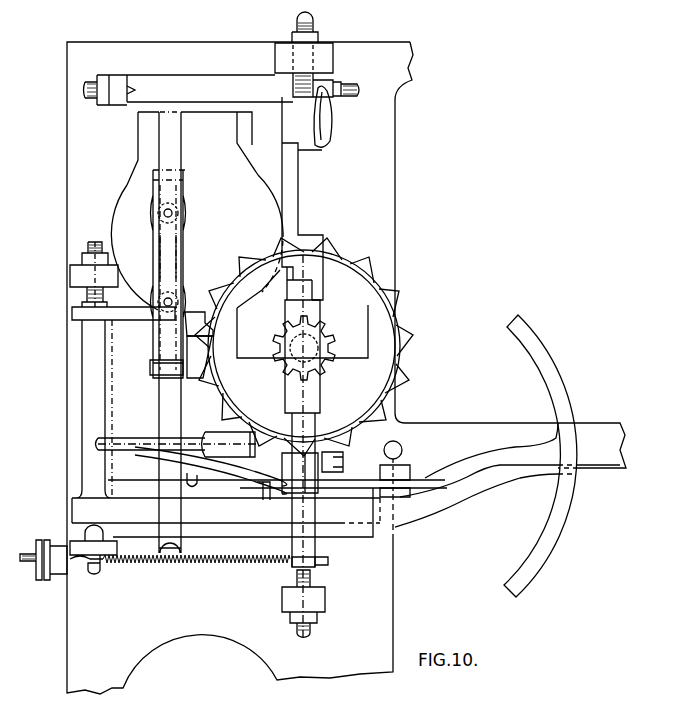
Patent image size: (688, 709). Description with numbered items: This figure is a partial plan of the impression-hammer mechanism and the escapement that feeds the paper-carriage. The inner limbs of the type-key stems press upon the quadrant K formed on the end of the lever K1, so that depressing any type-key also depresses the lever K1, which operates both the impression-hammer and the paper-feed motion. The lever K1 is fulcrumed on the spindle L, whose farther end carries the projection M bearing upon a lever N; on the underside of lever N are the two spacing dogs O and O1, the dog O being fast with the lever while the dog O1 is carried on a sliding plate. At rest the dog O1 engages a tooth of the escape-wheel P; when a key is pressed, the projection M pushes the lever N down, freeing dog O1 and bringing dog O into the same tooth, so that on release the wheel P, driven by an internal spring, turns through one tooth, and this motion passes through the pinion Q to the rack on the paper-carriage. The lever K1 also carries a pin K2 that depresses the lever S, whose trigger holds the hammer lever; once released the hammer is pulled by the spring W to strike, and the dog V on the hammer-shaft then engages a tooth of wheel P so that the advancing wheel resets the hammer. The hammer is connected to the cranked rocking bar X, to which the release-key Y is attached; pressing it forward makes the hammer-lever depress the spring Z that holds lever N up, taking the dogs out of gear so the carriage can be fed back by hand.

The lever N is at (177, 162).
The projection M is at (123, 307).
The release-key Y is at (332, 118).
The rocking bar X is at (323, 168).
The dog O1 is at (187, 317).
The dog O is at (187, 352).
The pinion Q is at (318, 341).
The escape-wheel P is at (304, 347).
The spring Z is at (158, 415).
The spindle L is at (83, 432).
The lever S is at (356, 485).
The pin or projection K2 is at (257, 496).
The dog or projection V is at (343, 460).
The lever K1 is at (445, 503).
The quadrant K is at (557, 537).
The spring W is at (271, 562).